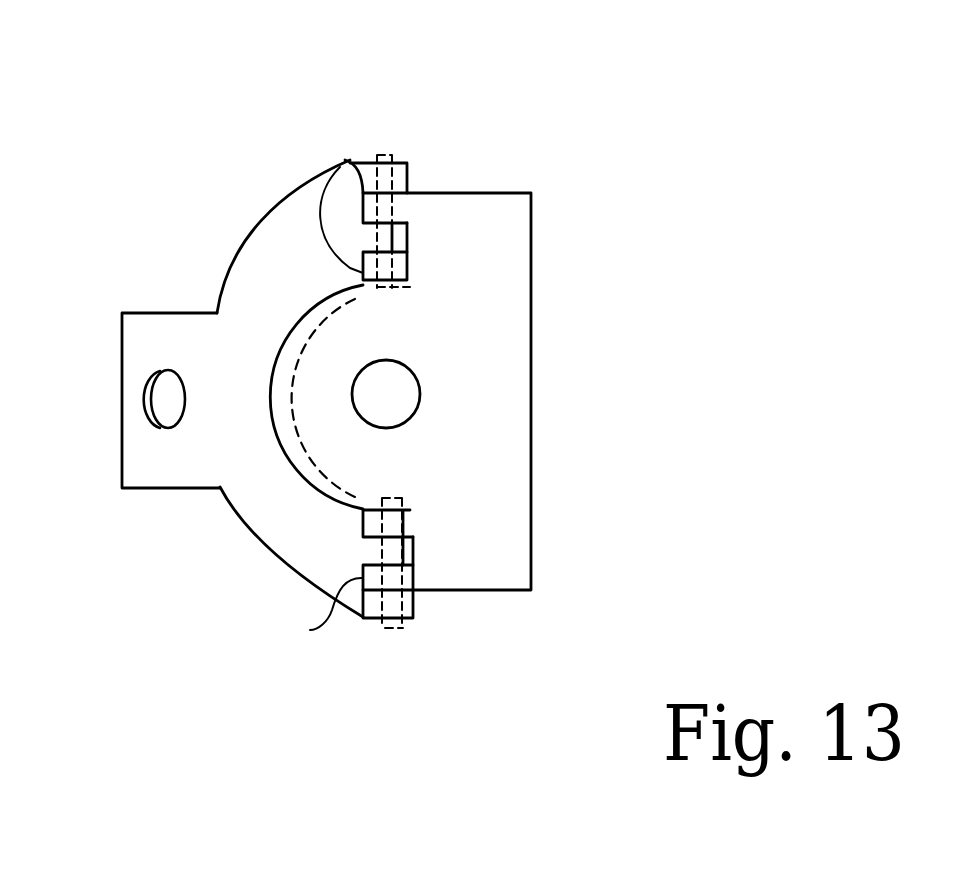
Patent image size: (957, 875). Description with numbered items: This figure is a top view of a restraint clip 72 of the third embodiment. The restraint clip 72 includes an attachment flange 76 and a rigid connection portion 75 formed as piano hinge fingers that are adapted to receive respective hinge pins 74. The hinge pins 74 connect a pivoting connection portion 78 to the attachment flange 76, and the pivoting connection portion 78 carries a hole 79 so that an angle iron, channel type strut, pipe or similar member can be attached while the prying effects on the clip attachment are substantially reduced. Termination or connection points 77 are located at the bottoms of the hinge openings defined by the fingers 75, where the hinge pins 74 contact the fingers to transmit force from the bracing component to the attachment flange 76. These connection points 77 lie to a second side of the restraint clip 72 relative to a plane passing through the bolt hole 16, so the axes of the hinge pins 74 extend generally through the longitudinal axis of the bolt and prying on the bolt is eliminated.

The bolt hole 16 is at (398, 399).
The restraint clip 72 is at (301, 190).
The hinge pins 74 is at (407, 173).
The rigid connection portion 75 is at (340, 167).
The attachment flange 76 is at (497, 312).
The connection points 77 is at (410, 235).
The pivoting connection portion 78 is at (161, 333).
The hole 79 is at (160, 402).